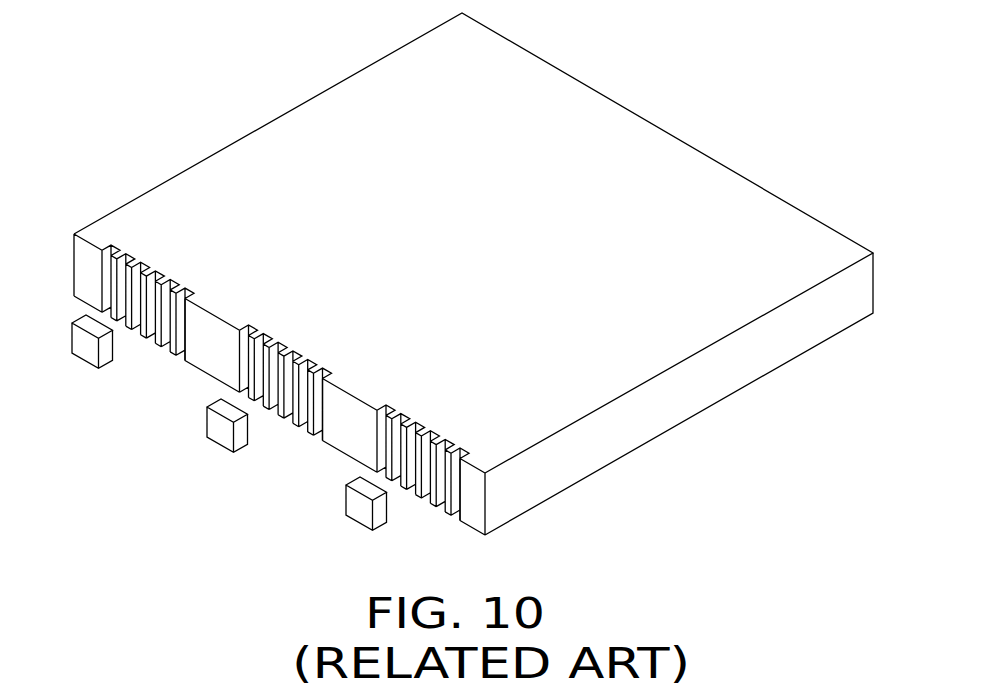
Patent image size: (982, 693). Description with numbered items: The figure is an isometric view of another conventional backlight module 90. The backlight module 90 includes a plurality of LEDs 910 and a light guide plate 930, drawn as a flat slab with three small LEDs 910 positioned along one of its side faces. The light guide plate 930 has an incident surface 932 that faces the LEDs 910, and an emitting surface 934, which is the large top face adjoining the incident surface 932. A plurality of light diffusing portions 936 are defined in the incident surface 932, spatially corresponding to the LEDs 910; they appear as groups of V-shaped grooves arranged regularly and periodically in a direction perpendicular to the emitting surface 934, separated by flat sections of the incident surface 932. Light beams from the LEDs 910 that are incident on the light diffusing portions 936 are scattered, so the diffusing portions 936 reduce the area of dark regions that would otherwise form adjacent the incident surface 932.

The backlight module 90 is at (629, 45).
The light guide plate 930 is at (276, 101).
The incident surface 932 is at (348, 430).
The emitting surface 934 is at (658, 163).
The light diffusing portions 936 is at (440, 509).
The LEDs 910 is at (87, 353).